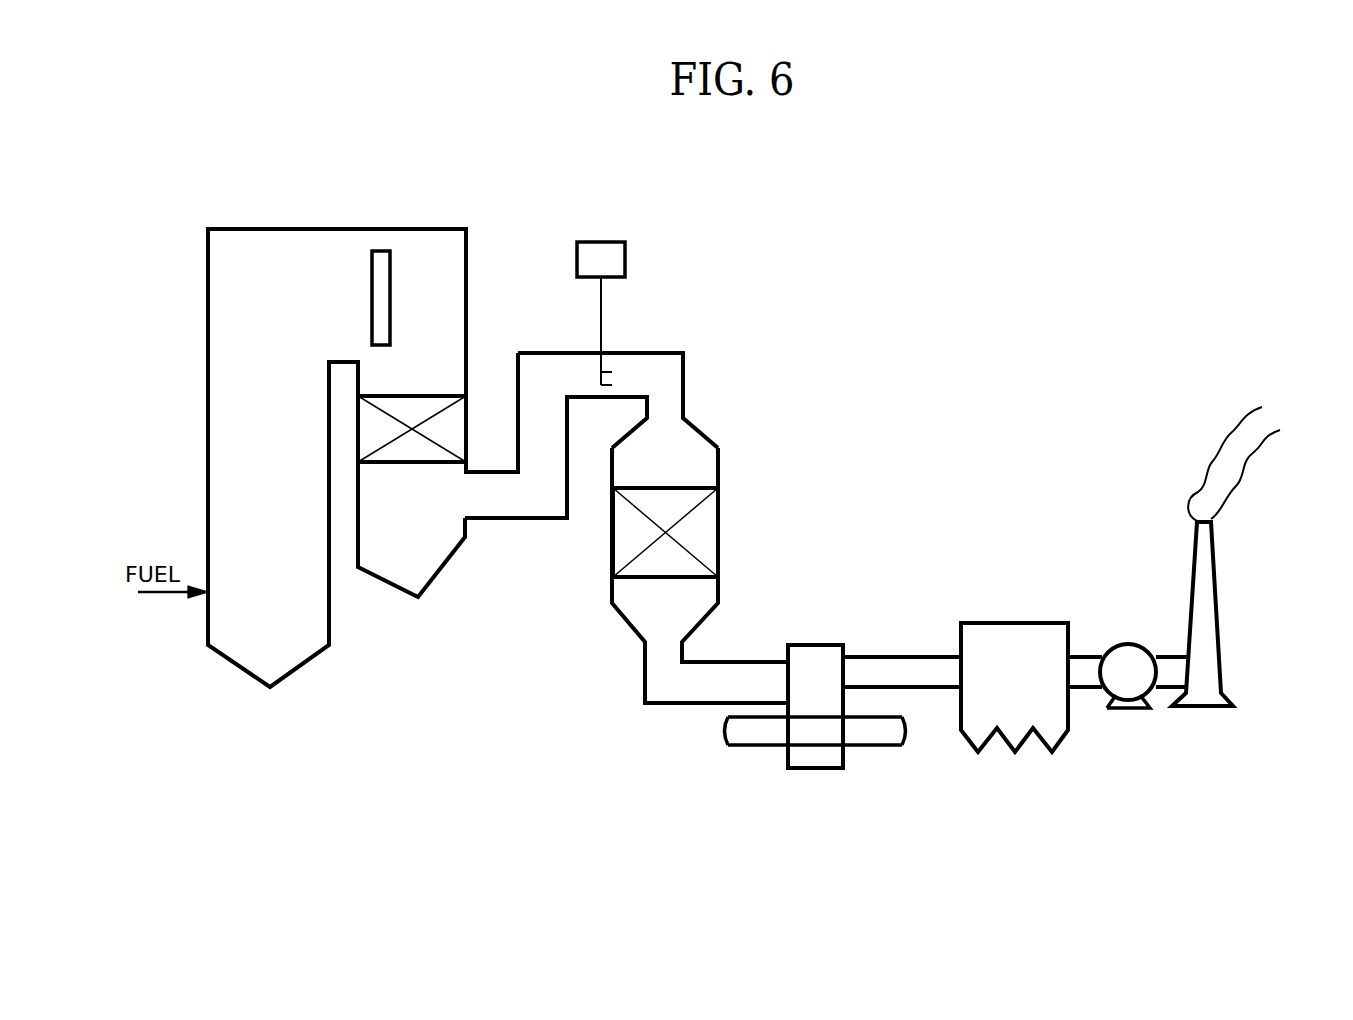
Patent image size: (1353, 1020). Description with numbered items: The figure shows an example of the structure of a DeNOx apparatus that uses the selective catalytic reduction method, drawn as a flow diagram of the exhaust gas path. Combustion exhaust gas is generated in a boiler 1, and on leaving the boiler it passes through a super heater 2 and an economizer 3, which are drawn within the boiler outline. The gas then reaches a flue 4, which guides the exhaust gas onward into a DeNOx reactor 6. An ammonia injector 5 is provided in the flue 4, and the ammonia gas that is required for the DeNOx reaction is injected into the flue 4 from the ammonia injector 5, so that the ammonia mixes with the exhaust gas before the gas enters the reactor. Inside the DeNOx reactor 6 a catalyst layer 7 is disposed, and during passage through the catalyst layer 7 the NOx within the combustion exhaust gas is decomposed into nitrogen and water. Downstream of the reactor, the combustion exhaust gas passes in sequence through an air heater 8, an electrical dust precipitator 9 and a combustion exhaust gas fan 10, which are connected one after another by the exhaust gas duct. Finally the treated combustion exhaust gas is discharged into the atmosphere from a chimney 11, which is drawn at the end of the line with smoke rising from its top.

The boiler 1 is at (450, 263).
The super heater 2 is at (380, 250).
The economizer 3 is at (430, 407).
The flue 4 is at (508, 505).
The ammonia injector 5 is at (600, 240).
The DeNOx reactor 6 is at (697, 455).
The catalyst layer 7 is at (705, 538).
The air heater 8 is at (815, 655).
The electrical dust precipitator 9 is at (1012, 640).
The combustion exhaust gas fan 10 is at (1126, 652).
The chimney 11 is at (1205, 602).